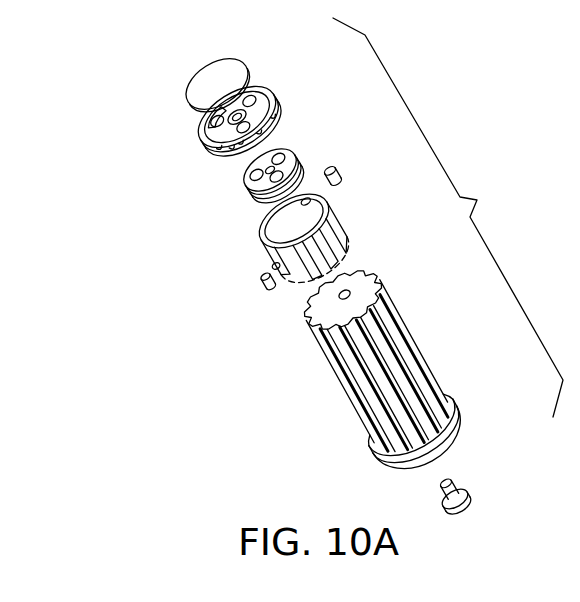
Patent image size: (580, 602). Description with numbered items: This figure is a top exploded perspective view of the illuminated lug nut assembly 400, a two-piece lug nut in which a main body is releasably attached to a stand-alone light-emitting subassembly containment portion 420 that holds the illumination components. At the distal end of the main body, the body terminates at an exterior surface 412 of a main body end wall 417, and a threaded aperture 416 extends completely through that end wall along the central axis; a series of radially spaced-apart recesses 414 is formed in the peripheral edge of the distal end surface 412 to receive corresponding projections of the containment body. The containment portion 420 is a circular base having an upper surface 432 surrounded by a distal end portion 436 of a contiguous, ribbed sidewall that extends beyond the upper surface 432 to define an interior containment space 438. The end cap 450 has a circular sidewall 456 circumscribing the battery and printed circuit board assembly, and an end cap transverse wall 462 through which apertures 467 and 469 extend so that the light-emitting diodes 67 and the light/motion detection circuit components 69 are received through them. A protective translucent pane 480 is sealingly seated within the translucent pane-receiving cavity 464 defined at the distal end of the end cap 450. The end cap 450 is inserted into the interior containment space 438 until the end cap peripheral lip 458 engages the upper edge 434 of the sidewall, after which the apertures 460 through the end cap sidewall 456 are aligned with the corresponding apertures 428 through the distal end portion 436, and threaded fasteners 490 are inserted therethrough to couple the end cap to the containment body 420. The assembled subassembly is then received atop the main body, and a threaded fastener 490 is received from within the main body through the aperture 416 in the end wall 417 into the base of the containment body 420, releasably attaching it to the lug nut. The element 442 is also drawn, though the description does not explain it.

The illuminated lug nut assembly 400 is at (448, 217).
The exterior surface of main body end wall 412 is at (304, 312).
The radially spaced-apart recesses 414 is at (312, 338).
The threaded aperture 416 is at (366, 280).
The main body end wall 417 is at (364, 298).
The light-emitting subassembly containment portion 420 is at (350, 221).
The apertures 428 is at (268, 268).
The upper surface 432 is at (255, 235).
The upper edge 434 is at (257, 218).
The distal end portion of contiguous sidewall 436 is at (337, 212).
The interior containment space 438 is at (291, 219).
The pin 442 is at (265, 288).
The end cap 450 is at (188, 148).
The circular sidewall of end cap 456 is at (274, 124).
The end cap peripheral lip 458 is at (208, 134).
The apertures through end cap sidewall 460 is at (232, 152).
The end cap transverse wall 462 is at (210, 120).
The translucent pane-receiving cavity 464 is at (270, 107).
The apertures 467 is at (252, 104).
The apertures 469 is at (240, 102).
The protective translucent pane 480 is at (213, 82).
The threaded fastener 490 is at (470, 495).
The light-emitting diodes 67 is at (296, 152).
The light/motion detection circuit components 69 is at (275, 152).